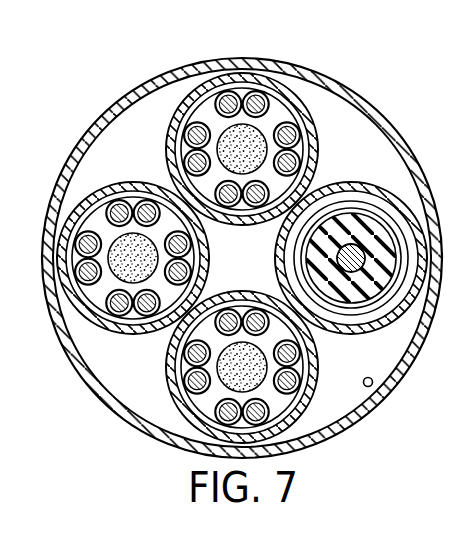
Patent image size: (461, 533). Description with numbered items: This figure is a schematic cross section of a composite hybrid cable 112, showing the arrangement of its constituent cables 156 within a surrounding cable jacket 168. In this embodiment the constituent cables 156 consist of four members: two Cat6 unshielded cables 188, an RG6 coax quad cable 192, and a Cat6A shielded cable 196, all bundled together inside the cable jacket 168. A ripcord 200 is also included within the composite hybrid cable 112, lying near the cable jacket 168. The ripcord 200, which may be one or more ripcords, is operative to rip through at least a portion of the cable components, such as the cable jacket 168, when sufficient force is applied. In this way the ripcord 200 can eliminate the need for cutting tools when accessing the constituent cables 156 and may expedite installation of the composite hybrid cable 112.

The composite hybrid cable 112 is at (231, 244).
The cable jacket 168 is at (193, 72).
The constituent cables 156 is at (231, 265).
The Cat6 unshielded cable 188 is at (162, 114).
The RG6 coax quad cable 192 is at (355, 169).
The Cat6A shielded cable 196 is at (168, 416).
The ripcord 200 is at (364, 382).